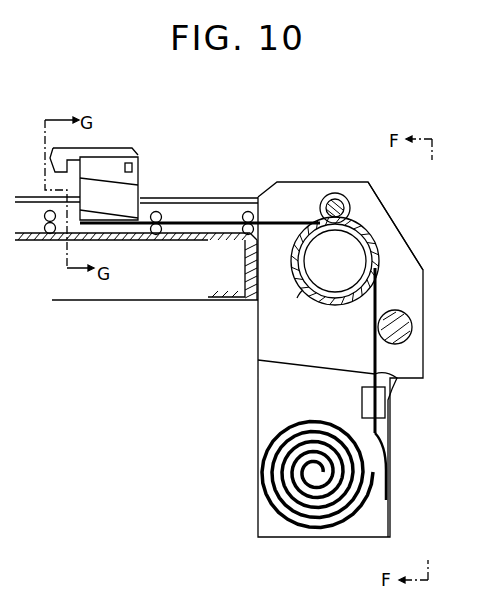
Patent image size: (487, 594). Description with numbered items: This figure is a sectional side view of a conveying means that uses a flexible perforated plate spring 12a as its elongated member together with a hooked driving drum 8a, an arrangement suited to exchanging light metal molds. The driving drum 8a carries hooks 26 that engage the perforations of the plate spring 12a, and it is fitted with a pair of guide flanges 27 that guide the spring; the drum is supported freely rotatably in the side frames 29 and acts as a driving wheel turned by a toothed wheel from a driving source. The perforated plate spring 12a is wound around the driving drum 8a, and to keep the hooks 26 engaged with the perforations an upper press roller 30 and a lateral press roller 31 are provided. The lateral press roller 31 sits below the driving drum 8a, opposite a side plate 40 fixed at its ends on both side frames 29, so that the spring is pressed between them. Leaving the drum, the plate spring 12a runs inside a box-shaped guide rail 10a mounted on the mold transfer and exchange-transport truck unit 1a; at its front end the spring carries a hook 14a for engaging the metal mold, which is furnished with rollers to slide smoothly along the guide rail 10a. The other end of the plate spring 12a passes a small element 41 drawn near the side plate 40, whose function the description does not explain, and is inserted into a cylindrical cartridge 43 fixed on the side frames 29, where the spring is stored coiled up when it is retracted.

The mold transfer and exchange-transport truck unit 1a is at (165, 242).
The guide rail 10a is at (192, 195).
The perforated plate spring 12a is at (215, 222).
The hook 14a is at (140, 165).
The upper press roller 30 is at (350, 204).
The side frame 29 is at (395, 215).
The driving drum 8a is at (360, 270).
The guide flange 27 is at (378, 290).
The hook 26 is at (297, 298).
The side plate 40 is at (370, 341).
The lateral press roller 31 is at (413, 327).
The fastener 41 is at (387, 415).
The cylindrical cartridge 43 is at (378, 498).